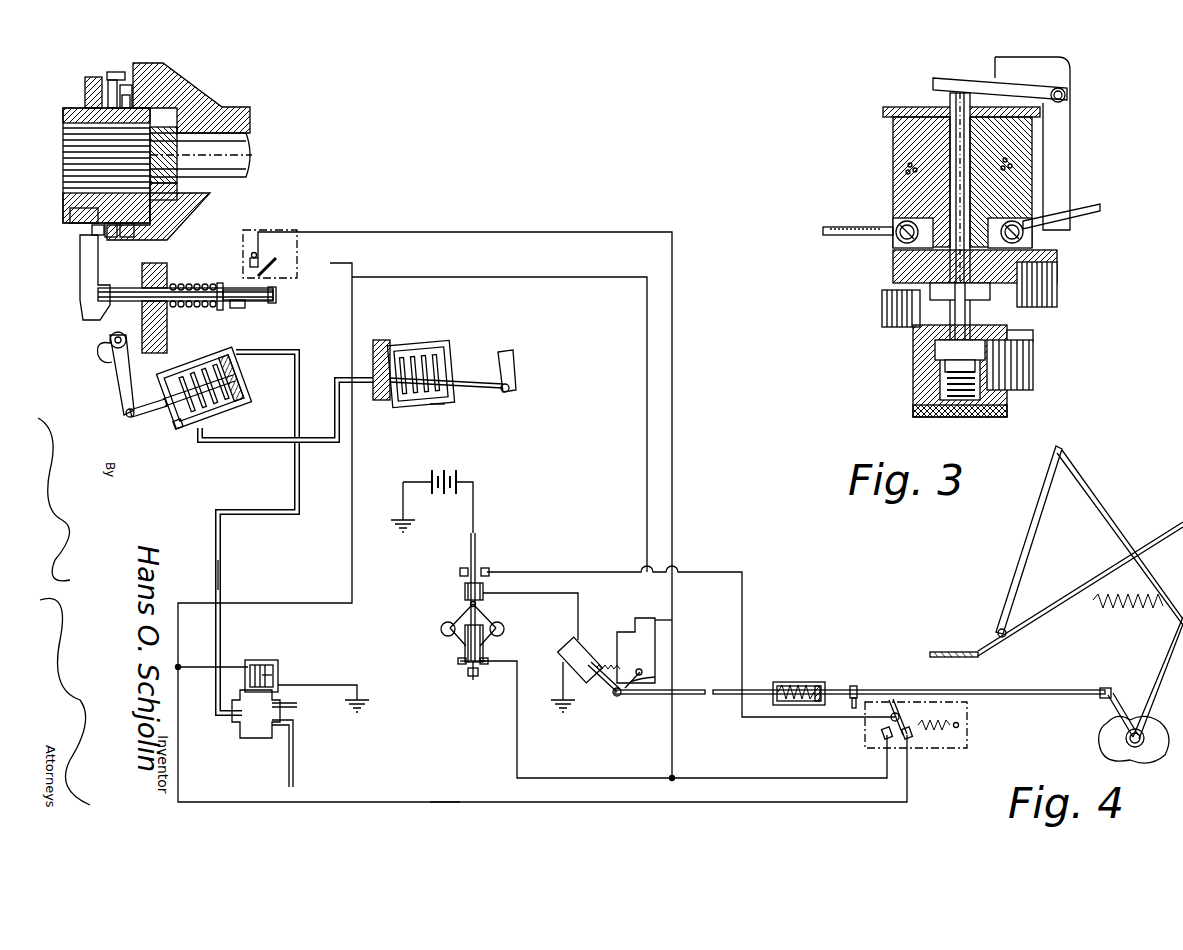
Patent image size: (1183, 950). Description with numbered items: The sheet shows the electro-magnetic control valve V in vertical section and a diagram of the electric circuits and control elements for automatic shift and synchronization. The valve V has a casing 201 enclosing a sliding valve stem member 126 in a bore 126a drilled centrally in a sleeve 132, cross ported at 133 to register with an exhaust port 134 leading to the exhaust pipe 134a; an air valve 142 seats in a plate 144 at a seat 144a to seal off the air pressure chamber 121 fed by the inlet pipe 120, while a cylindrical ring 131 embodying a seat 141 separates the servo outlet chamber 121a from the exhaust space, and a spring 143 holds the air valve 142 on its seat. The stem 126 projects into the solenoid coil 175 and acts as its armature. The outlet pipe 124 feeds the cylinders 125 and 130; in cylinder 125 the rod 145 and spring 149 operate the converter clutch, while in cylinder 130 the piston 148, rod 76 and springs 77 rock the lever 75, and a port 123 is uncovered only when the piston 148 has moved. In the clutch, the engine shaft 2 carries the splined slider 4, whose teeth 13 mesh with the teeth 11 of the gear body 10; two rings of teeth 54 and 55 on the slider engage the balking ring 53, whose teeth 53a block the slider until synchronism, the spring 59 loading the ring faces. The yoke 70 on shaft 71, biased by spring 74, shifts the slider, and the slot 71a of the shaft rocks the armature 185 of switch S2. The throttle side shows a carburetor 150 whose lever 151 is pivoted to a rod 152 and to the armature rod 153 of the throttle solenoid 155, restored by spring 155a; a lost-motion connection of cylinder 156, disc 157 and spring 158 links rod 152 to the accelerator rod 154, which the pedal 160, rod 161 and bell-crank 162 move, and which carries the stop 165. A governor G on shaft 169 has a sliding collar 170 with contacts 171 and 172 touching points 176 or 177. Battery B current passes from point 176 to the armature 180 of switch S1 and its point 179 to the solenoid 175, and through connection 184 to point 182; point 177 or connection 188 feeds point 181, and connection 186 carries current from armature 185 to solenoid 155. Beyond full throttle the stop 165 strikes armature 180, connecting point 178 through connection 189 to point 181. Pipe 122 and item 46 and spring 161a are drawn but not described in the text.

In FIG. 4, the shaft 2 is at (252, 165).
In FIG. 4, the slider 4 is at (66, 110).
In FIG. 4, the gear body 10 is at (190, 98).
In FIG. 4, the teeth 11 is at (112, 74).
In FIG. 4, the teeth 13 is at (86, 80).
In FIG. 4, the lever 46 is at (512, 364).
In FIG. 4, the balking ring 53 is at (130, 78).
In FIG. 4, the teeth of balking ring 53a is at (173, 194).
In FIG. 4, the ring of teeth 54 is at (163, 155).
In FIG. 4, the ring of teeth 55 is at (100, 215).
In FIG. 4, the spring 59 is at (82, 228).
In FIG. 4, the yoke 70 is at (80, 262).
In FIG. 4, the shaft 71 is at (126, 290).
In FIG. 4, the intersecting slot 71a is at (276, 296).
In FIG. 4, the spring 74 is at (190, 284).
In FIG. 4, the lever 75 is at (112, 392).
In FIG. 4, the rod 76 is at (146, 414).
In FIG. 4, the springs 77 is at (206, 362).
In FIG. 4, the inlet pipe 120 is at (296, 772).
In FIG. 3, the air pressure chamber 121 is at (940, 372).
In FIG. 3, the servo outlet chamber 121a is at (882, 305).
In FIG. 4, the pipe 122 is at (237, 443).
In FIG. 4, the port 123 is at (207, 428).
In FIG. 4, the outlet pipe 124 is at (222, 570).
In FIG. 4, the cylinder 125 is at (437, 404).
In FIG. 3, the valve stem member 126 is at (950, 98).
In FIG. 3, the bore 126a is at (940, 168).
In FIG. 4, the cylinder 130 is at (178, 428).
In FIG. 3, the cylindrical ring 131 is at (975, 300).
In FIG. 3, the sleeve 132 is at (945, 195).
In FIG. 3, the cross port 133 is at (910, 272).
In FIG. 3, the exhaust port 134 is at (1057, 268).
In FIG. 4, the exhaust pipe 134a is at (298, 712).
In FIG. 3, the seat 141 is at (930, 290).
In FIG. 3, the air valve 142 is at (1000, 392).
In FIG. 3, the spring 143 is at (970, 400).
In FIG. 3, the plate 144 is at (913, 345).
In FIG. 3, the seat 144a is at (1007, 336).
In FIG. 4, the rod 145 is at (470, 380).
In FIG. 4, the piston 148 is at (232, 358).
In FIG. 4, the spring 149 is at (430, 348).
In FIG. 4, the engine carburetor 150 is at (645, 626).
In FIG. 4, the lever 151 is at (660, 678).
In FIG. 4, the rod 152 is at (381, 344).
In FIG. 4, the solenoid armature rod 153 is at (616, 696).
In FIG. 4, the accelerator rod 154 is at (1010, 692).
In FIG. 4, the throttle control solenoid 155 is at (567, 649).
In FIG. 4, the spring 155a is at (606, 666).
In FIG. 4, the cylinder 156 is at (800, 684).
In FIG. 4, the disc 157 is at (819, 686).
In FIG. 4, the spring 158 is at (784, 684).
In FIG. 4, the accelerator pedal 160 is at (1008, 592).
In FIG. 4, the rod 161 is at (1108, 522).
In FIG. 4, the spring 161a is at (1082, 598).
In FIG. 4, the bell-crank 162 is at (1148, 700).
In FIG. 4, the stop 165 is at (853, 708).
In FIG. 4, the shaft 169 is at (473, 677).
In FIG. 4, the sliding collar 170 is at (485, 593).
In FIG. 4, the contact 171 is at (463, 590).
In FIG. 4, the contact 172 is at (463, 648).
In FIG. 4, the solenoid coil 175 is at (252, 666).
In FIG. 3, the solenoid coil 175 is at (893, 132).
In FIG. 4, the contact point 176 is at (490, 570).
In FIG. 4, the contact point 177 is at (458, 662).
In FIG. 4, the switch point 178 is at (885, 736).
In FIG. 4, the switch point 179 is at (908, 740).
In FIG. 4, the armature 180 is at (898, 708).
In FIG. 4, the point 181 is at (250, 262).
In FIG. 4, the point 182 is at (276, 265).
In FIG. 4, the connection 184 is at (446, 802).
In FIG. 4, the armature 185 is at (257, 255).
In FIG. 4, the connection 186 is at (647, 437).
In FIG. 4, the connection 188 is at (674, 500).
In FIG. 4, the connection 189 is at (762, 778).
In FIG. 4, the casing 201 is at (246, 732).
In FIG. 3, the casing 201 is at (935, 352).
In FIG. 4, the battery B is at (460, 478).
In FIG. 4, the governor G is at (455, 615).
In FIG. 4, the control valve V is at (272, 680).
In FIG. 3, the control valve V is at (913, 410).
In FIG. 4, the switch S1 is at (963, 726).
In FIG. 4, the switch S2 is at (290, 246).